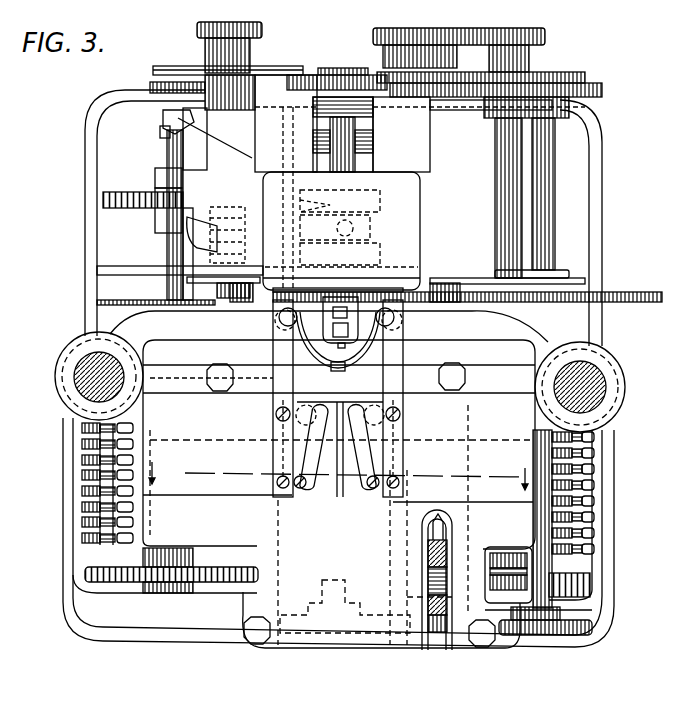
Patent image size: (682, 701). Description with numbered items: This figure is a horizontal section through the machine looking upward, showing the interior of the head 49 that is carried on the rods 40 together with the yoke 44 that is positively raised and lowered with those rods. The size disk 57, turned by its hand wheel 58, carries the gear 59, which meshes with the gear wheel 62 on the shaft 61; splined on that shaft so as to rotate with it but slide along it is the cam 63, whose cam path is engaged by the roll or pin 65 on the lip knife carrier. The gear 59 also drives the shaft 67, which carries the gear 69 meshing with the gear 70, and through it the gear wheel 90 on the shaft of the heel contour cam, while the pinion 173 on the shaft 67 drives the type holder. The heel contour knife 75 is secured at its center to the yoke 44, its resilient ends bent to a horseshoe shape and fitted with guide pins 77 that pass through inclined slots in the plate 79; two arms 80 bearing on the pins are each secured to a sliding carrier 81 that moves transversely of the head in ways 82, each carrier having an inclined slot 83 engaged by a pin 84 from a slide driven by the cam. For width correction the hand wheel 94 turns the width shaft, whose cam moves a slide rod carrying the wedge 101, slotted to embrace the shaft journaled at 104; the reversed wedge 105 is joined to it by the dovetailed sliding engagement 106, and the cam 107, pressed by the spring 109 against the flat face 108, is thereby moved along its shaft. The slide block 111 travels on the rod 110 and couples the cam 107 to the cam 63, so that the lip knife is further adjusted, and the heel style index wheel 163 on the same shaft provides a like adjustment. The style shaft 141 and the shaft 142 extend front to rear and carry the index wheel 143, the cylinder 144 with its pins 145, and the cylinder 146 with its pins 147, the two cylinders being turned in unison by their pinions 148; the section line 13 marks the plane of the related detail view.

The section line 13 is at (340, 473).
The rods 40 is at (96, 374).
The yoke 44 is at (329, 326).
The head 49 is at (85, 285).
The size disk 57 is at (484, 72).
The hand wheel 58 is at (440, 28).
The gear 59 is at (602, 88).
The shaft 61 is at (347, 164).
The gear wheel 62 is at (310, 74).
The cam 63 is at (377, 200).
The roll or pin 65 is at (356, 232).
The shaft 67 is at (545, 194).
The gear 69 is at (592, 628).
The gear 70 is at (443, 633).
The heel contour knife 75 is at (368, 364).
The guide pins 77 is at (280, 322).
The plate 79 is at (304, 352).
The arms 80 is at (278, 377).
The sliding carriers 81 is at (325, 478).
The ways 82 is at (189, 401).
The inclined slot 83 is at (318, 424).
The pin 84 is at (373, 492).
The gear wheel 90 is at (338, 632).
The hand wheel 94 is at (390, 48).
The wedge 101 is at (165, 116).
The journal 104 is at (205, 84).
The wedge 105 is at (192, 157).
The dovetailed sliding engagement 106 is at (182, 130).
The cam 107 is at (195, 243).
The flat face 108 is at (208, 190).
The spring 109 is at (183, 216).
The rod 110 is at (283, 122).
The slide block 111 is at (296, 251).
The style shaft 141 is at (507, 190).
The shaft 142 is at (175, 145).
The index wheel 143 is at (572, 76).
The cylinder 144 is at (583, 475).
The pins 145 is at (590, 549).
The cylinder 146 is at (92, 498).
The pins 147 is at (82, 456).
The pinion 148 is at (85, 576).
The heel style index wheel 163 is at (194, 64).
The pinion 173 is at (626, 302).